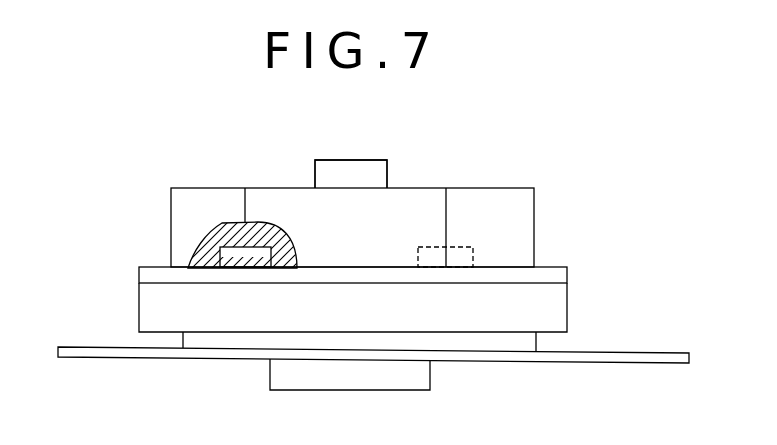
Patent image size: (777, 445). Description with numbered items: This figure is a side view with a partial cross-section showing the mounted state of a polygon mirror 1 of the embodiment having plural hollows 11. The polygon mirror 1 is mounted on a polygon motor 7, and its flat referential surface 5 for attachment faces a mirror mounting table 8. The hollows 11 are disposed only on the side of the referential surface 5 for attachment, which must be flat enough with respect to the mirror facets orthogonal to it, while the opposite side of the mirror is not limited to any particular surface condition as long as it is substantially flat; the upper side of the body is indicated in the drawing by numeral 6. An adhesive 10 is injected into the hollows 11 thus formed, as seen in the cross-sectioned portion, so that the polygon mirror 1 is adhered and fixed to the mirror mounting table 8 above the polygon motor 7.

The polygon mirror 1 is at (500, 222).
The referential surface for attachment 5 is at (181, 268).
The projection 6 is at (482, 188).
The polygon motor 7 is at (557, 312).
The mirror mounting table 8 is at (562, 273).
The adhesive 10 is at (268, 262).
The hollows 11 is at (240, 253).